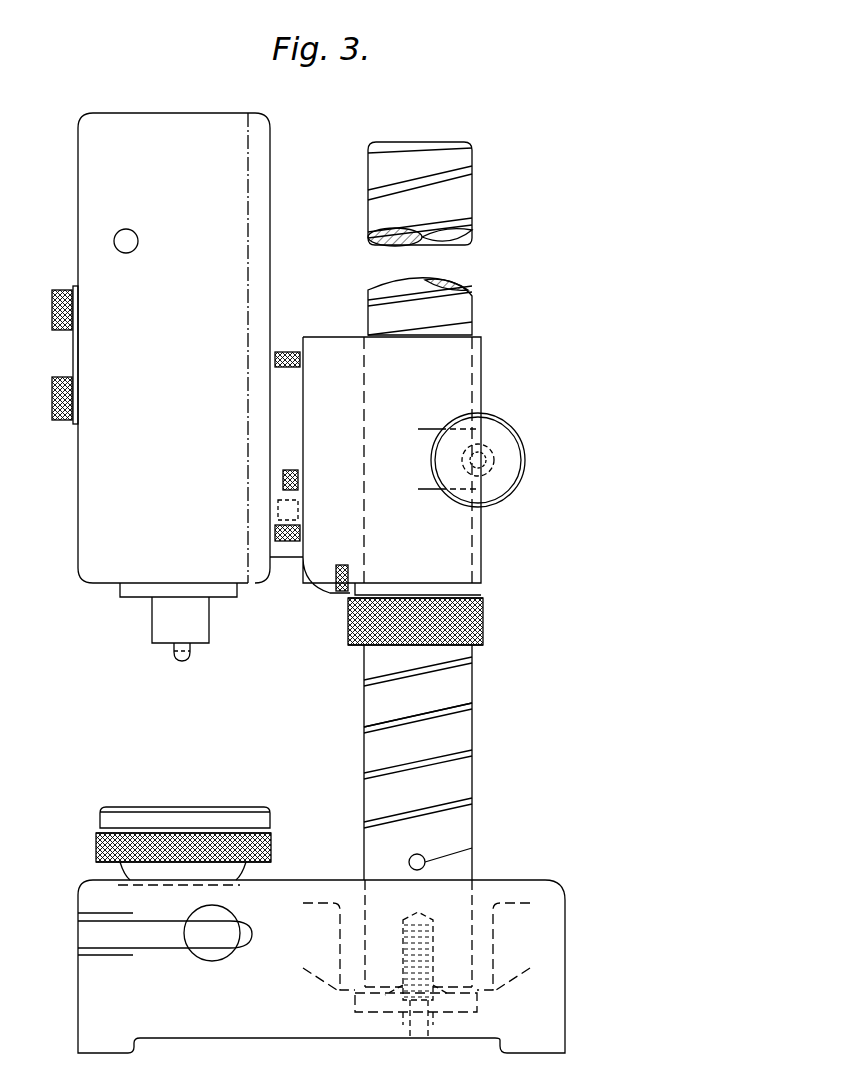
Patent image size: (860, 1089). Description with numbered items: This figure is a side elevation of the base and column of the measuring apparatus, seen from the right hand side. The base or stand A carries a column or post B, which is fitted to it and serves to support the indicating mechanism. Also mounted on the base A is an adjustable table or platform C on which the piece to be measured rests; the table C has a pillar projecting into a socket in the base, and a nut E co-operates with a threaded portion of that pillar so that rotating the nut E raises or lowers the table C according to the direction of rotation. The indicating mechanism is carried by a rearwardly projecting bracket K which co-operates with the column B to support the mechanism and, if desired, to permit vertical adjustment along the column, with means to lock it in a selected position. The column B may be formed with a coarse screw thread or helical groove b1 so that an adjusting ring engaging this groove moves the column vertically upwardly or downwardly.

The rearwardly projecting bracket K is at (455, 385).
The column B is at (457, 780).
The helical groove b1 is at (470, 712).
The table C is at (182, 812).
The nut E is at (268, 845).
The base A is at (478, 897).